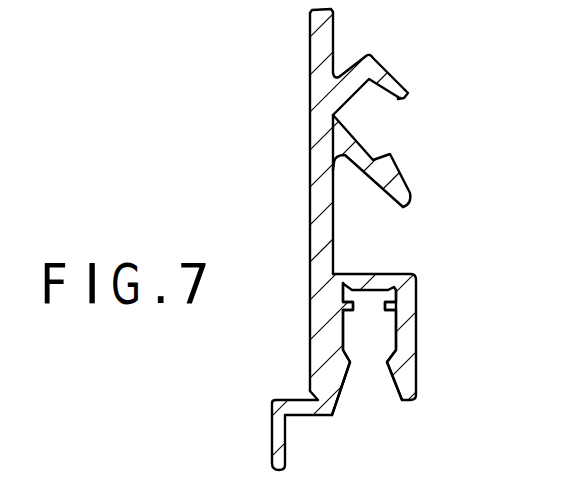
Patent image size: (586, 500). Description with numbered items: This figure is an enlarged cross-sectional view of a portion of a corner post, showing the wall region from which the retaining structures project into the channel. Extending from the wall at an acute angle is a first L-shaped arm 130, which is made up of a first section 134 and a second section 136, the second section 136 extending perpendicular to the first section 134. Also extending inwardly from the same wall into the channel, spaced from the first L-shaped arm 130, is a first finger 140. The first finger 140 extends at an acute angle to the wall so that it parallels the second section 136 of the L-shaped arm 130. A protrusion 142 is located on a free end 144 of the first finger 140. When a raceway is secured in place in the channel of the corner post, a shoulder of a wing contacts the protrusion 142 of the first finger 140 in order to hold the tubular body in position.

The first L-shaped arm 130 is at (388, 70).
The first section 134 is at (352, 62).
The second section 136 is at (404, 97).
The protrusion 142 is at (391, 163).
The free end 144 is at (383, 183).
The first finger 140 is at (410, 202).